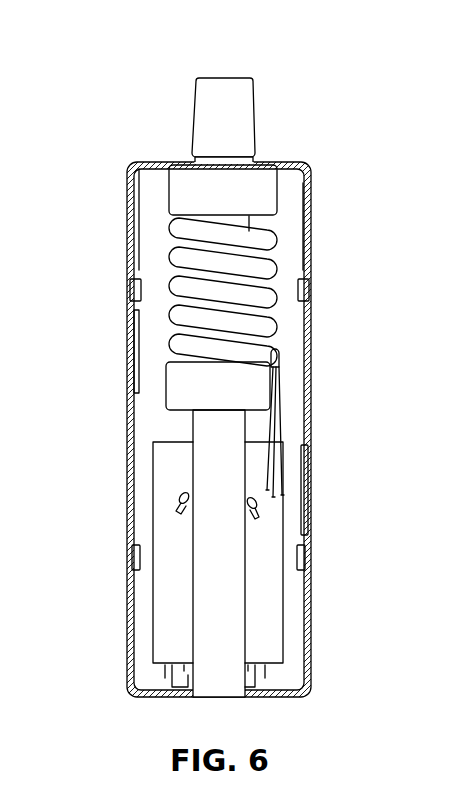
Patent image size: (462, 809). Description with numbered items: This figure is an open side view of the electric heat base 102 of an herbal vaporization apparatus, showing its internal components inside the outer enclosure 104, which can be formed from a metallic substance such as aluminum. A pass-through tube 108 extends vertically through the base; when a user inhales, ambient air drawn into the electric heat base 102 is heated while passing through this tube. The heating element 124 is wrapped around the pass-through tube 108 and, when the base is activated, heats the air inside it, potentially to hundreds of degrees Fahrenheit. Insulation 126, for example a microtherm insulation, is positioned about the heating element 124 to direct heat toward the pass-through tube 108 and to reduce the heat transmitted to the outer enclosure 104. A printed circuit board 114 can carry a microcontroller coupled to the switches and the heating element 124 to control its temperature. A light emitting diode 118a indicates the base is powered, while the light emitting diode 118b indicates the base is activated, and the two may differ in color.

The electric heat base 102 is at (390, 109).
The outer enclosure 104 is at (312, 352).
The pass-through tube 108 is at (254, 106).
The printed circuit board 114 is at (153, 473).
The light emitting diode 118a is at (175, 500).
The light emitting diode 118b is at (256, 506).
The heating element 124 is at (278, 253).
The insulation 126 is at (169, 180).